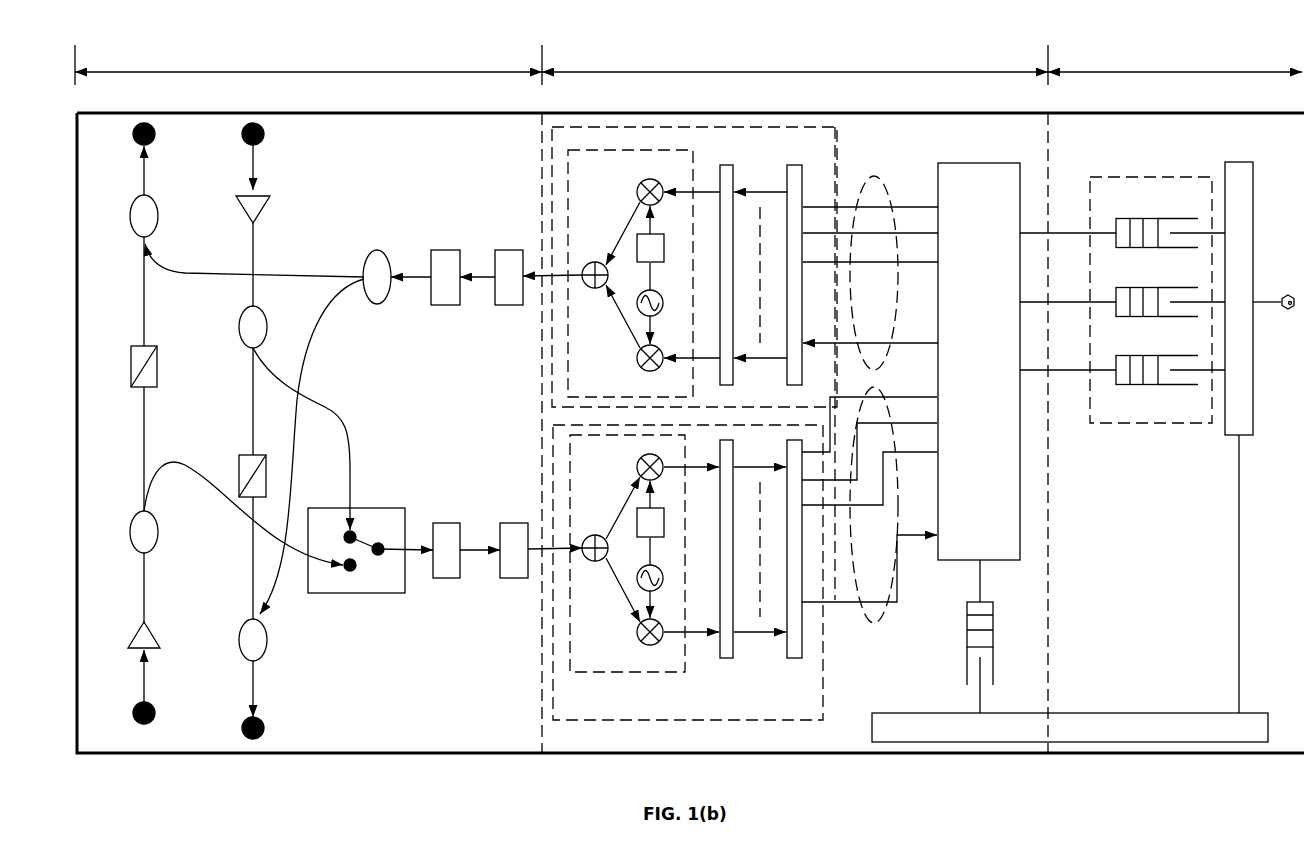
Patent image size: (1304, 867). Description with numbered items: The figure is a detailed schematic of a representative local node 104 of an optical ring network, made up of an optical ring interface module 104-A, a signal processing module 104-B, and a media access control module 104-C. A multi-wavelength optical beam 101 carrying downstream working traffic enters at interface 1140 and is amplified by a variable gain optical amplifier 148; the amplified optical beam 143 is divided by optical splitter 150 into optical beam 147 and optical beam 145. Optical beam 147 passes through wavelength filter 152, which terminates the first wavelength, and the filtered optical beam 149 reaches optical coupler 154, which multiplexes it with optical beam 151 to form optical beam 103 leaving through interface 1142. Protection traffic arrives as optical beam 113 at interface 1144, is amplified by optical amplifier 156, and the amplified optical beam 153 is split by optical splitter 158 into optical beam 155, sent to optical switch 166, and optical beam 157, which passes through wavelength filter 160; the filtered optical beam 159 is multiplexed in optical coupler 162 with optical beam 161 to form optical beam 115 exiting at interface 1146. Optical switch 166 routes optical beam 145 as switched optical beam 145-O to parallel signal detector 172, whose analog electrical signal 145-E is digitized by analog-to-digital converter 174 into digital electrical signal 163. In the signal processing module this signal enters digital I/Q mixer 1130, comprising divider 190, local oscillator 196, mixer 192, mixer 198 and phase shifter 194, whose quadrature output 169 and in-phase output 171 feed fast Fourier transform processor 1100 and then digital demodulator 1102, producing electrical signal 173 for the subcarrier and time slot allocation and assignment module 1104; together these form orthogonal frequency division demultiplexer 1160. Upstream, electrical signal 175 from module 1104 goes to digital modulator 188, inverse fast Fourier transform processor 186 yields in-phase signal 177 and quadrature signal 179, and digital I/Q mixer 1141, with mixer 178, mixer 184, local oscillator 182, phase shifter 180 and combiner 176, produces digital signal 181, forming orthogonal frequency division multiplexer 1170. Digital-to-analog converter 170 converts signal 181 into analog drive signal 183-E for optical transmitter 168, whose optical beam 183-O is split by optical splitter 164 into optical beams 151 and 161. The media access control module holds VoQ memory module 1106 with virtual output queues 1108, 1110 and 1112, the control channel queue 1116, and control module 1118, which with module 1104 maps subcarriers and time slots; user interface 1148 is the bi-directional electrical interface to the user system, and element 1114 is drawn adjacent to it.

The local node 104 is at (1010, 753).
The optical ring interface module 104-A is at (308, 55).
The signal processing module 104-B is at (795, 54).
The media access control module 104-C is at (1175, 54).
The optical beam 101 is at (257, 172).
The optical beam 103 is at (257, 686).
The optical beam 113 is at (144, 678).
The optical beam 115 is at (144, 168).
The amplified optical beam 143 is at (257, 240).
The optical beam 145 is at (325, 410).
The switched optical beam 145-O is at (413, 547).
The analog electrical signal 145-E is at (472, 552).
The optical beam 147 is at (253, 398).
The variable gain optical amplifier 148 is at (271, 209).
The filtered optical beam 149 is at (253, 578).
The optical splitter 150 is at (232, 327).
The optical beam 151 is at (313, 332).
The wavelength filter 152 is at (240, 465).
The amplified optical beam 153 is at (144, 583).
The optical coupler 154 is at (273, 640).
The optical beam 155 is at (183, 470).
The optical amplifier 156 is at (124, 635).
The optical beam 157 is at (144, 442).
The optical splitter 158 is at (123, 532).
The filtered optical beam 159 is at (144, 302).
The wavelength filter 160 is at (124, 366).
The optical beam 161 is at (200, 260).
The optical coupler 162 is at (124, 216).
The digital electrical signal 163 is at (538, 552).
The optical splitter 164 is at (379, 288).
The optical switch 166 is at (356, 562).
The optical transmitter 168 is at (447, 290).
The electrical signal 169 is at (702, 633).
The digital-to-analog converter 170 is at (512, 267).
The electrical signal 171 is at (703, 467).
The parallel signal detector 172 is at (448, 539).
The electrical signal 173 is at (869, 499).
The analog-to-digital converter 174 is at (516, 539).
The electrical signal 175 is at (891, 399).
The combiner 176 is at (590, 288).
The electrical signal 177 is at (697, 192).
The mixer 178 is at (636, 211).
The electrical signal 179 is at (702, 358).
The phase shifter 180 is at (637, 247).
The digital electrical signal 181 is at (557, 278).
The local oscillator 182 is at (645, 307).
The optical beam 183-O is at (409, 273).
The analog electrical drive signal 183-E is at (483, 273).
The mixer 184 is at (636, 340).
The inverse fast Fourier transform processor 186 is at (737, 177).
The digital modulator 188 is at (860, 286).
The divider 190 is at (593, 562).
The mixer 192 is at (634, 490).
The phase shifter 194 is at (637, 520).
The local oscillator 196 is at (640, 583).
The mixer 198 is at (637, 614).
The fast Fourier transform processor 1100 is at (737, 660).
The digital demodulator 1102 is at (799, 562).
The subcarrier and time slot allocation and assignment module 1104 is at (979, 351).
The VoQ memory module 1106 is at (1116, 286).
The virtual output queue 1108 is at (1170, 222).
The virtual output queue 1110 is at (1170, 291).
The virtual output queue 1112 is at (1170, 358).
The interface 1114 is at (1241, 427).
The control channel virtual output queue 1116 is at (954, 636).
The control module 1118 is at (1070, 714).
The digital I/Q mixer 1130 is at (627, 566).
The interface 1140 is at (277, 136).
The digital I/Q mixer 1141 is at (694, 267).
The interface 1142 is at (279, 728).
The interface 1144 is at (169, 713).
The interface 1146 is at (168, 136).
The user interface 1148 is at (1290, 310).
The orthogonal frequency division demultiplexer 1160 is at (688, 584).
The orthogonal frequency division multiplexer 1170 is at (859, 363).